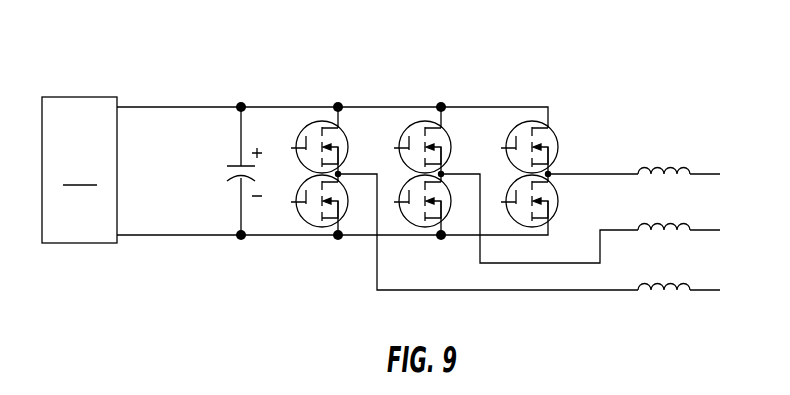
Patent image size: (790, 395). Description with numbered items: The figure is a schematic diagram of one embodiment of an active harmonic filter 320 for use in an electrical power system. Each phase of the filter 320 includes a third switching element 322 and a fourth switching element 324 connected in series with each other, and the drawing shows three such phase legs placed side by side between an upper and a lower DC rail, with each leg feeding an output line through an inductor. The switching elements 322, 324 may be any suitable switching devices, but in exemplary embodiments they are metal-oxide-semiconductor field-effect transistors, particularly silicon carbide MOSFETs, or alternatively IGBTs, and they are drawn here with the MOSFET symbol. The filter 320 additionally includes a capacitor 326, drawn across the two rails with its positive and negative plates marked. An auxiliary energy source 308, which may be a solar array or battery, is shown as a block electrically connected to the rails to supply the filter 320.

The auxiliary energy source 308 is at (79, 170).
The active harmonic filter 320 is at (140, 78).
The third switching element 322 is at (298, 117).
The fourth switching element 324 is at (289, 225).
The capacitor 326 is at (214, 129).